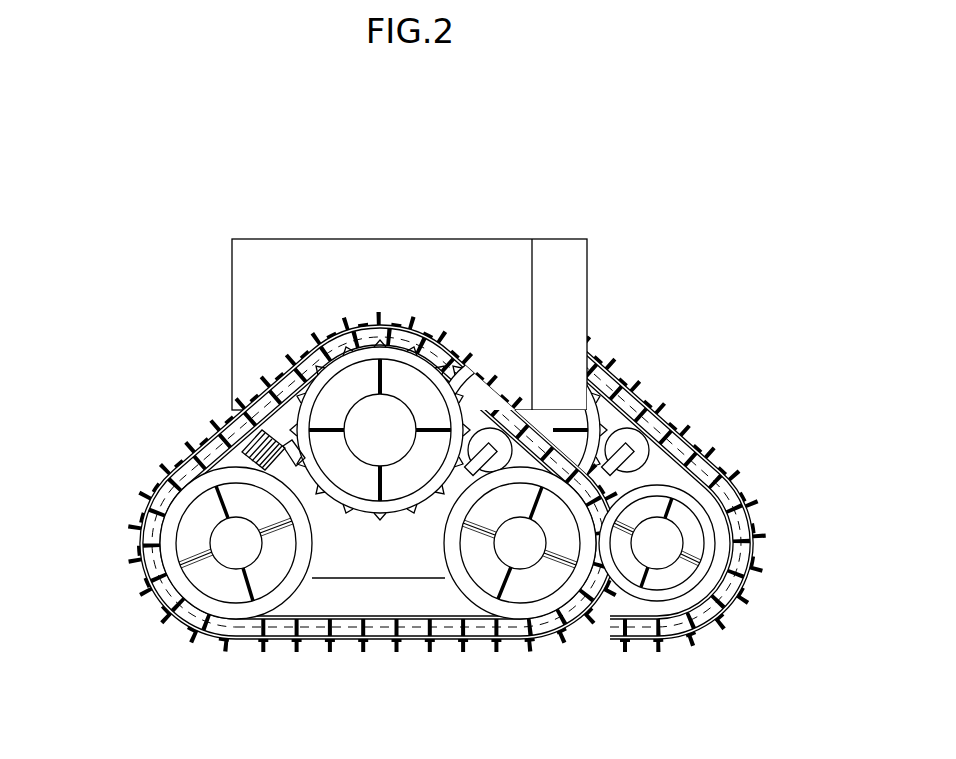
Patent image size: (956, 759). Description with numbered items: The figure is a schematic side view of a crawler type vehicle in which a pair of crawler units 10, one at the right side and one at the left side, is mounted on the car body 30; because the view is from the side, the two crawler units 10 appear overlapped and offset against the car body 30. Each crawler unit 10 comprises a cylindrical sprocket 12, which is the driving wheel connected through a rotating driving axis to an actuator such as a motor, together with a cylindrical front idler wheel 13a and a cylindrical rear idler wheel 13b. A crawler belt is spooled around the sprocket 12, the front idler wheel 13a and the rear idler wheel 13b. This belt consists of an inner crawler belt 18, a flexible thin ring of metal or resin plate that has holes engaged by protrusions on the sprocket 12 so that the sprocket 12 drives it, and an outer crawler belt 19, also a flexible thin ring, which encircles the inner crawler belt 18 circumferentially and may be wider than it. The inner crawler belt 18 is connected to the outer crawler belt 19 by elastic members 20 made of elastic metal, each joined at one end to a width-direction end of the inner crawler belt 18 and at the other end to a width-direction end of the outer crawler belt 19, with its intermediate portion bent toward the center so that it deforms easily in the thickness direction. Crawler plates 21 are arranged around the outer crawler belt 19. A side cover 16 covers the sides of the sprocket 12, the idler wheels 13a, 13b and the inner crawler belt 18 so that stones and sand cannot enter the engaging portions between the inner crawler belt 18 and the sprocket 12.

The crawler unit 10 is at (150, 488).
The sprocket 12 is at (342, 386).
The front idler wheel 13a is at (533, 608).
The rear idler wheel 13b is at (197, 600).
The side cover 16 is at (382, 630).
The inner crawler belt 18 is at (185, 462).
The outer crawler belt 19 is at (178, 458).
The elastic members 20 is at (142, 575).
The crawler plates 21 is at (213, 422).
The car body 30 is at (385, 250).